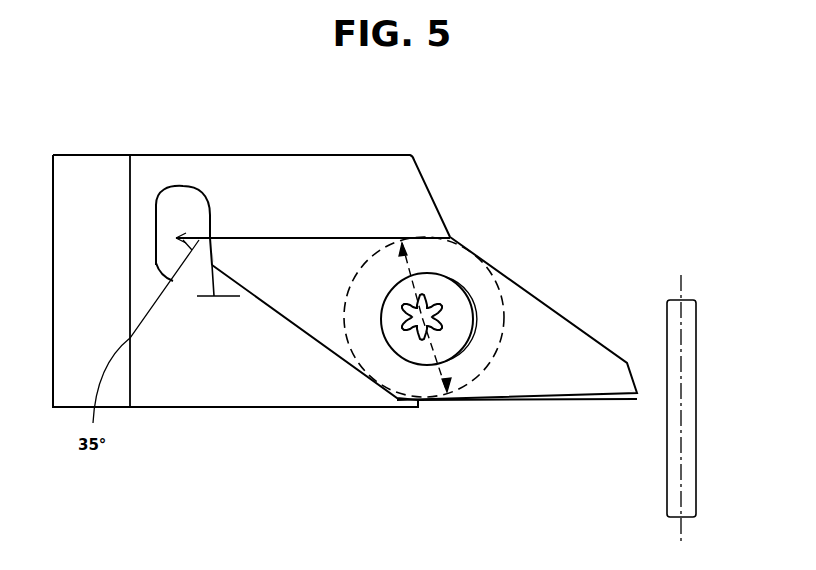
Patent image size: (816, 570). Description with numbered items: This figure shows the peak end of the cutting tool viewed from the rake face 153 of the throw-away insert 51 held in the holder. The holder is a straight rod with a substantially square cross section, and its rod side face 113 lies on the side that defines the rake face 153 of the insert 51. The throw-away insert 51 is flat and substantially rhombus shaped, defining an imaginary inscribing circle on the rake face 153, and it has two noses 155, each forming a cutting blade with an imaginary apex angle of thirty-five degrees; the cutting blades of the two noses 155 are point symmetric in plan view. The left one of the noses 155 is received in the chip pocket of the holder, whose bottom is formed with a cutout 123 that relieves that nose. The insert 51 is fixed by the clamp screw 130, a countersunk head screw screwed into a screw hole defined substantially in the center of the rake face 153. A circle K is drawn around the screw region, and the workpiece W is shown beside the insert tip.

The rod side face 113 is at (81, 189).
The cutout 123 is at (181, 212).
The throw-away insert 51 is at (553, 308).
The rake face 153 is at (554, 368).
The noses 155 is at (212, 254).
The clamp screw 130 is at (433, 339).
The cutting region circle K is at (405, 268).
The workpiece W is at (688, 320).